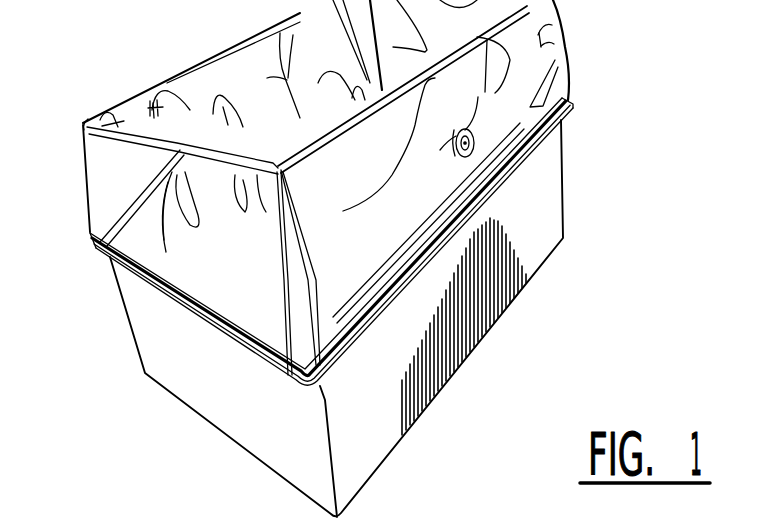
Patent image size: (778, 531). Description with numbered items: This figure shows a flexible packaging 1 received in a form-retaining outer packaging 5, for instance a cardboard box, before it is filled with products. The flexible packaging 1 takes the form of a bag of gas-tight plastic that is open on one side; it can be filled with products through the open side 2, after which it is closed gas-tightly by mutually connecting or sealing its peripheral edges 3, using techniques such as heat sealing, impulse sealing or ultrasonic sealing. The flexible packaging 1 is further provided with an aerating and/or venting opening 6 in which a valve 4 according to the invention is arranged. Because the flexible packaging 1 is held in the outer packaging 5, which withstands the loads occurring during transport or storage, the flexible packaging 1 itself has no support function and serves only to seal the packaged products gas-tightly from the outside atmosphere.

The flexible packaging 1 is at (330, 277).
The open side 2 is at (152, 108).
The peripheral edges 3 is at (357, 340).
The valve 4 is at (478, 146).
The form-retaining outer packaging 5 is at (198, 372).
The aerating and/or venting opening 6 is at (457, 158).